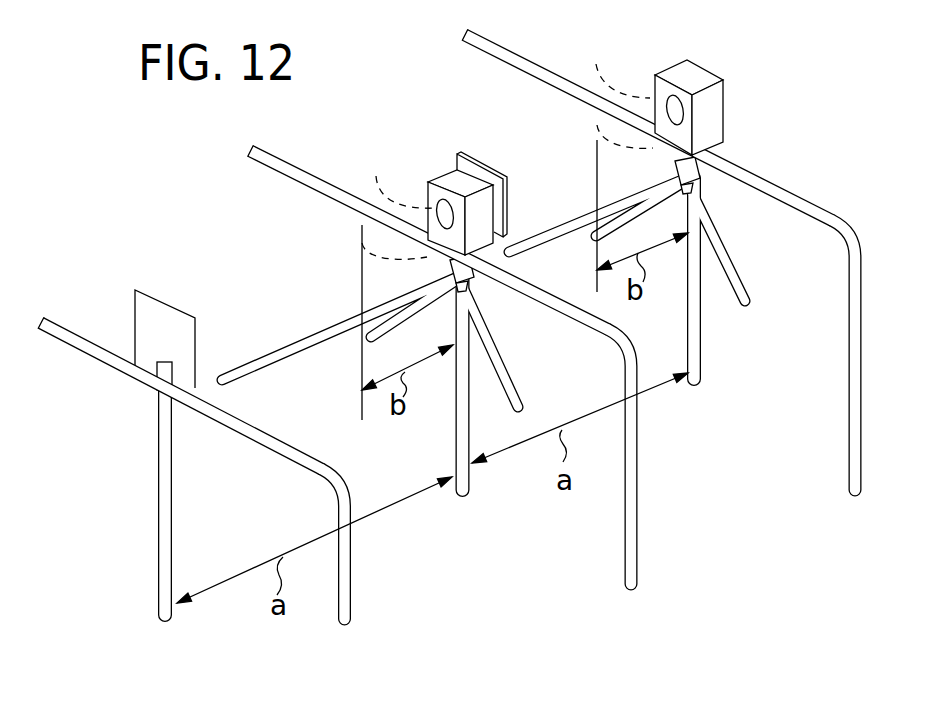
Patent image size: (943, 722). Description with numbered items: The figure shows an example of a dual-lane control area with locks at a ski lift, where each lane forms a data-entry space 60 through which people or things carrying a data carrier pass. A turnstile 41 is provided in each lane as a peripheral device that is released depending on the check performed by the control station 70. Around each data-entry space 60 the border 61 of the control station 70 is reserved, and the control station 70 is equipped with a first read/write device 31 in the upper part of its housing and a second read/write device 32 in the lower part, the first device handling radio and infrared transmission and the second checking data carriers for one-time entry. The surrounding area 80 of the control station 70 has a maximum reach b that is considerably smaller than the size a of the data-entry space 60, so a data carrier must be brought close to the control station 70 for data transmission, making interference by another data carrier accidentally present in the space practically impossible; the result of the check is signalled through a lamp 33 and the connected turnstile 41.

The first read/write device 31 is at (541, 117).
The lamp 33 is at (441, 205).
The second read/write device 32 is at (452, 268).
The turnstile 41 is at (286, 352).
The data-entry space 60 is at (480, 616).
The border 61 is at (145, 316).
The control station 70 is at (483, 210).
The surrounding area 80 is at (504, 148).